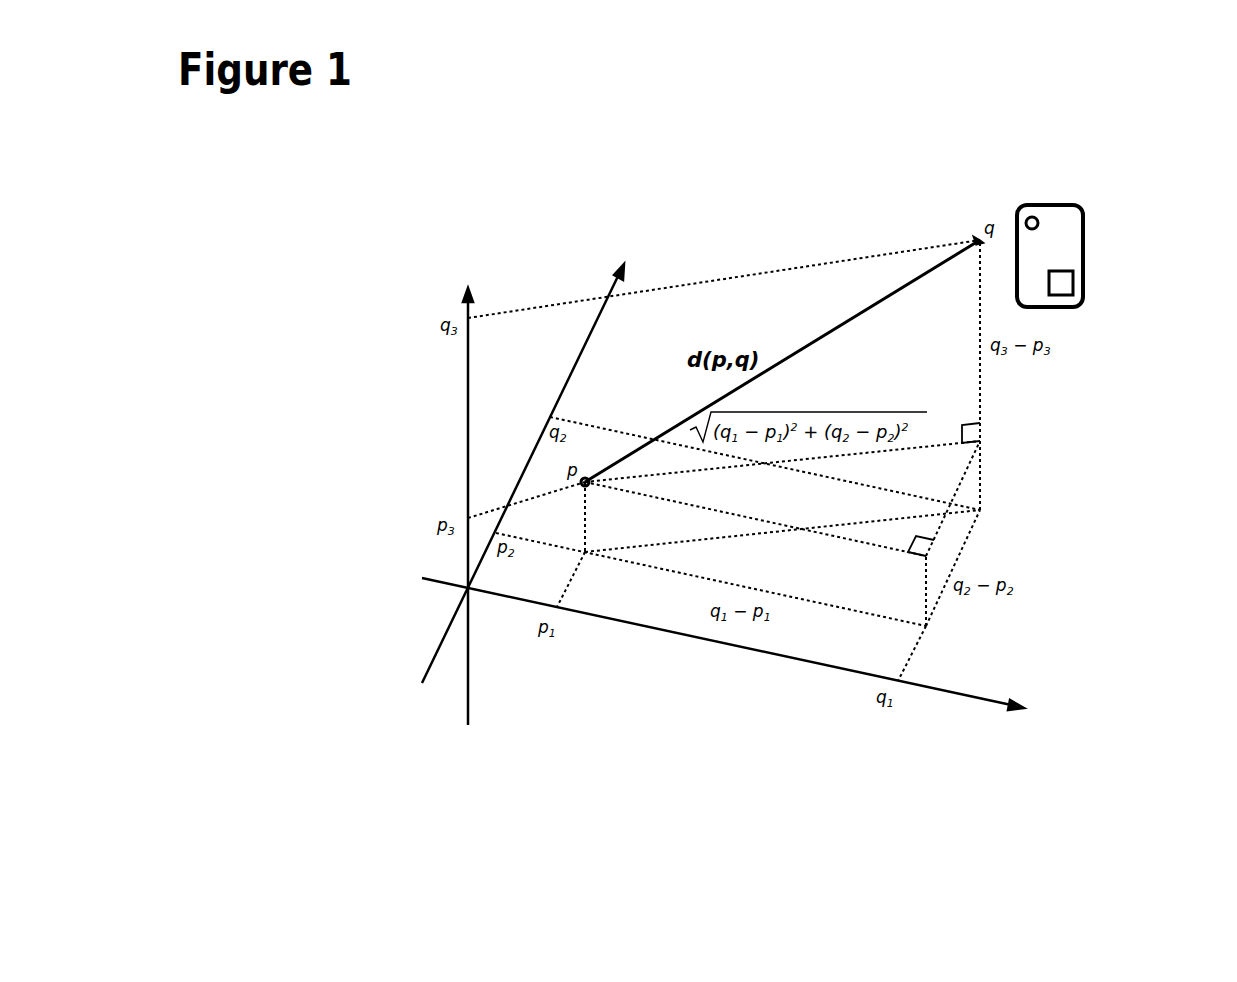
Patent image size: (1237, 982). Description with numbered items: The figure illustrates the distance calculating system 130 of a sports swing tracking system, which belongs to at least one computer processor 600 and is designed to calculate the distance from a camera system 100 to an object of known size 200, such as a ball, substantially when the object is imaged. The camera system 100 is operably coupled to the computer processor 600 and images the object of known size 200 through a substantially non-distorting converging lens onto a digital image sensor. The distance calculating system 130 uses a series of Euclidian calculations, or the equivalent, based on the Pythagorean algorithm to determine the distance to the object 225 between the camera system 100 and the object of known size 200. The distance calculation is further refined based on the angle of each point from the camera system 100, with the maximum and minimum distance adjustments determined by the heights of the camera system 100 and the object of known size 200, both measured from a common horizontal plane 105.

The camera system 100 is at (1030, 208).
The computer processor 600 is at (1063, 276).
The object of known size 200 is at (581, 486).
The distance to the object 225 is at (898, 457).
The common horizontal plane 105 is at (920, 640).
The distance calculating system 130 is at (595, 728).